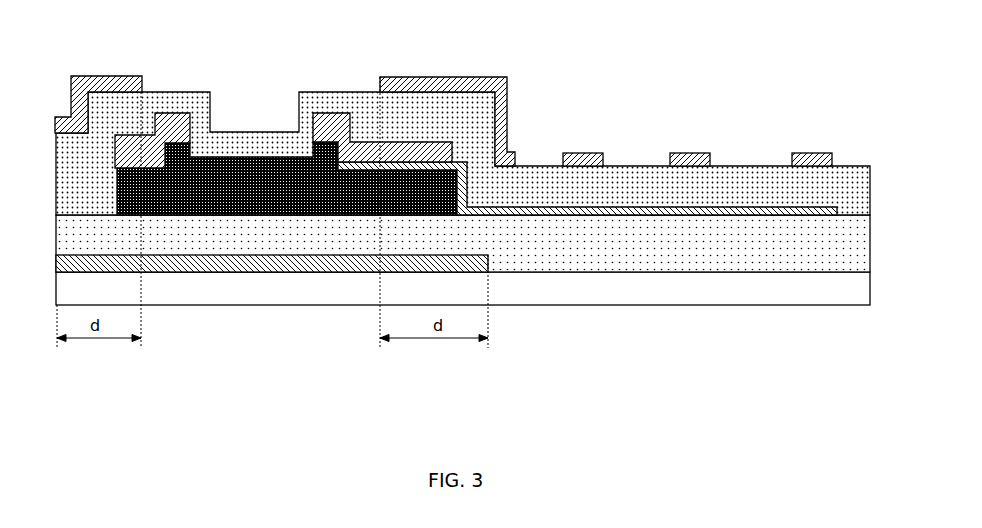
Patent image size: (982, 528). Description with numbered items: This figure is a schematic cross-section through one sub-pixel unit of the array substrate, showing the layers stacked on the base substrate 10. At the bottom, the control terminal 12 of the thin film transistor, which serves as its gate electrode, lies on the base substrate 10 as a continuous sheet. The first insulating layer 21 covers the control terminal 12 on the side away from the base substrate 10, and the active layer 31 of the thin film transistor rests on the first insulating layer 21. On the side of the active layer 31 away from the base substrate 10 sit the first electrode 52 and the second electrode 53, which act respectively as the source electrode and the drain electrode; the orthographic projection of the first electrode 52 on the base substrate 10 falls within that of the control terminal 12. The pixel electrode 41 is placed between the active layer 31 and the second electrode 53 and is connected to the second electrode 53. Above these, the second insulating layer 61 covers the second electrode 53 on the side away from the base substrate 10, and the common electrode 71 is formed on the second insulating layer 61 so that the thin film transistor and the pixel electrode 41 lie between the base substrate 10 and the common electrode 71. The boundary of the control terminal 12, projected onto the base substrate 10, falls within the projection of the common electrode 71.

The base substrate 10 is at (207, 290).
The control terminal 12 is at (285, 260).
The first insulating layer 21 is at (522, 245).
The active layer 31 is at (242, 183).
The pixel electrode 41 is at (607, 213).
The first electrode 52 is at (173, 123).
The second electrode 53 is at (367, 150).
The second insulating layer 61 is at (620, 183).
The common electrode 71 is at (437, 79).